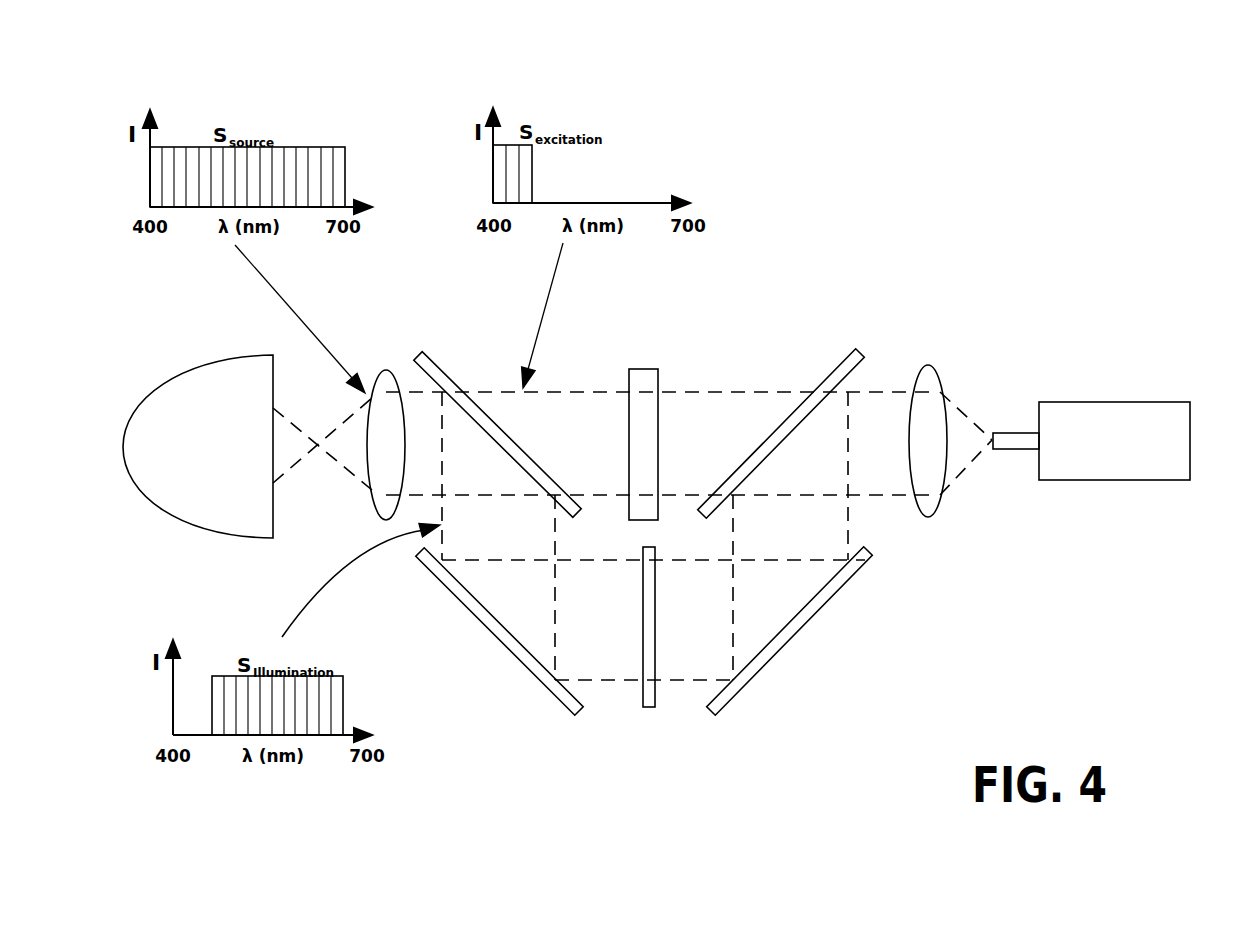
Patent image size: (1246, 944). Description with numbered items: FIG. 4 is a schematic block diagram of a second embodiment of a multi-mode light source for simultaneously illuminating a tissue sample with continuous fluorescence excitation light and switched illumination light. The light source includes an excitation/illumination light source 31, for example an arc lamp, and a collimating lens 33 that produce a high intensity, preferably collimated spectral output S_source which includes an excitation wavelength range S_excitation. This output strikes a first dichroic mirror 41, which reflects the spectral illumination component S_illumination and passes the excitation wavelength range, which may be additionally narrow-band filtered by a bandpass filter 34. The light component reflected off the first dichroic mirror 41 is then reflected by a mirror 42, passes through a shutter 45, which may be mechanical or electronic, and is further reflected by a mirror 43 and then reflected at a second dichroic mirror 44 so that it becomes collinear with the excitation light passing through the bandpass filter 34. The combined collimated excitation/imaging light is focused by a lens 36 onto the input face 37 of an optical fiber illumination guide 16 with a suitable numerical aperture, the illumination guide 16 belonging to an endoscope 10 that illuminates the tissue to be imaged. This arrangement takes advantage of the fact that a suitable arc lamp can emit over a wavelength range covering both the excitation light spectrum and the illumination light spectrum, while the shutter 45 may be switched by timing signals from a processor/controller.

The endoscope 10 is at (1127, 402).
The illumination guide 16 is at (1012, 430).
The excitation/illumination light source 31 is at (228, 525).
The collimating lens 33 is at (387, 518).
The bandpass filter 34 is at (643, 368).
The lens 36 is at (930, 367).
The input face 37 is at (988, 444).
The first dichroic mirror 41 is at (420, 354).
The mirror 42 is at (532, 675).
The mirror 43 is at (762, 668).
The second dichroic mirror 44 is at (860, 348).
The shutter 45 is at (648, 707).